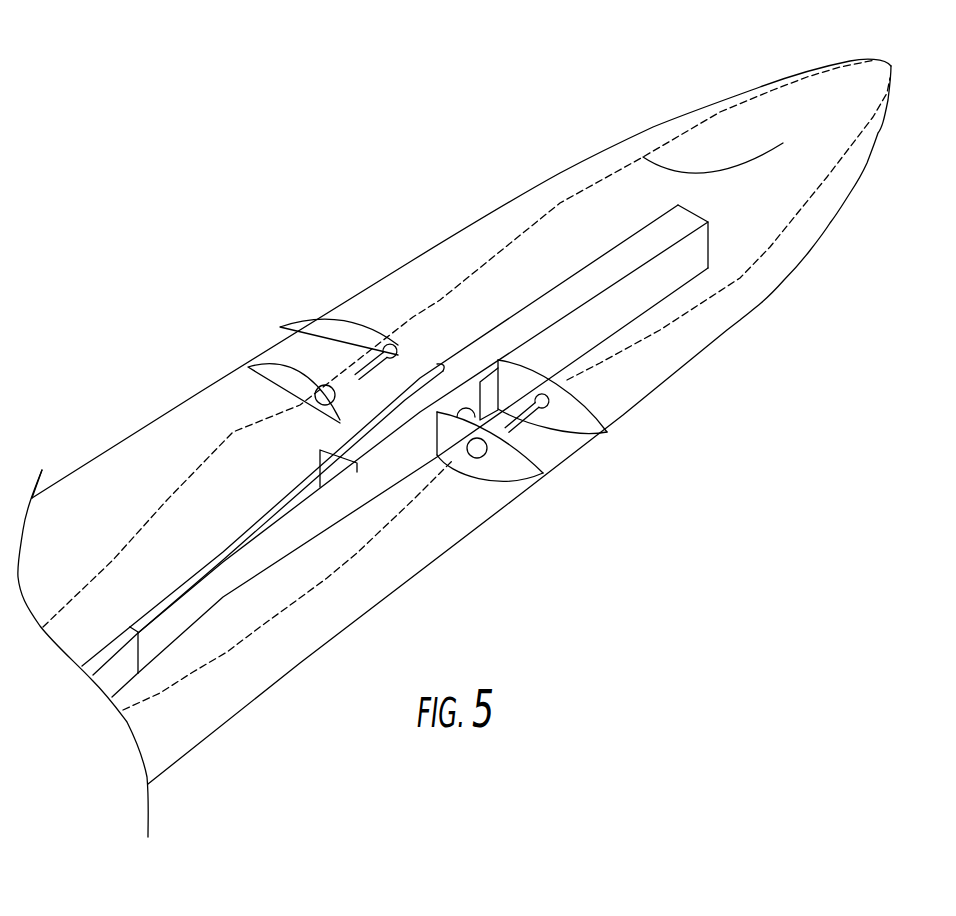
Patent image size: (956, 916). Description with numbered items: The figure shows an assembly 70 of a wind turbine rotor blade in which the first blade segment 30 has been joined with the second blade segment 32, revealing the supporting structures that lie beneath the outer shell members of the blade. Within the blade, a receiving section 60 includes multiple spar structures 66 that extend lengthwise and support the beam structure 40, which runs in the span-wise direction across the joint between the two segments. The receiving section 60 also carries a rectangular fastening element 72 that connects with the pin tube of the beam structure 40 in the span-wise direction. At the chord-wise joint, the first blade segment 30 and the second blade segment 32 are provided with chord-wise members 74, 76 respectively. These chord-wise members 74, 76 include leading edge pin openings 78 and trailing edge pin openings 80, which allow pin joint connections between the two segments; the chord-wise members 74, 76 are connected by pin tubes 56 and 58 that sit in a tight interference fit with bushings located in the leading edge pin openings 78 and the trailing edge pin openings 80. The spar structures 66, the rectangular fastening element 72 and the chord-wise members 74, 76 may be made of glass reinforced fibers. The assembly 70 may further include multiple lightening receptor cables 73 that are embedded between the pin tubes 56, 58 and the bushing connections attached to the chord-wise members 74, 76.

The first blade segment 30 is at (653, 127).
The second blade segment 32 is at (85, 483).
The beam structure 40 is at (620, 267).
The pin tube 56 is at (537, 410).
The pin tube 58 is at (387, 350).
The receiving section 60 is at (419, 539).
The spar structures 66 is at (253, 515).
The assembly 70 is at (175, 218).
The rectangular fastening element 72 is at (322, 470).
The lightening receptor cables 73 is at (793, 225).
The chord-wise member 74 is at (597, 397).
The chord-wise member 76 is at (505, 485).
The leading edge pin openings 78 is at (563, 428).
The trailing edge pin openings 80 is at (280, 327).